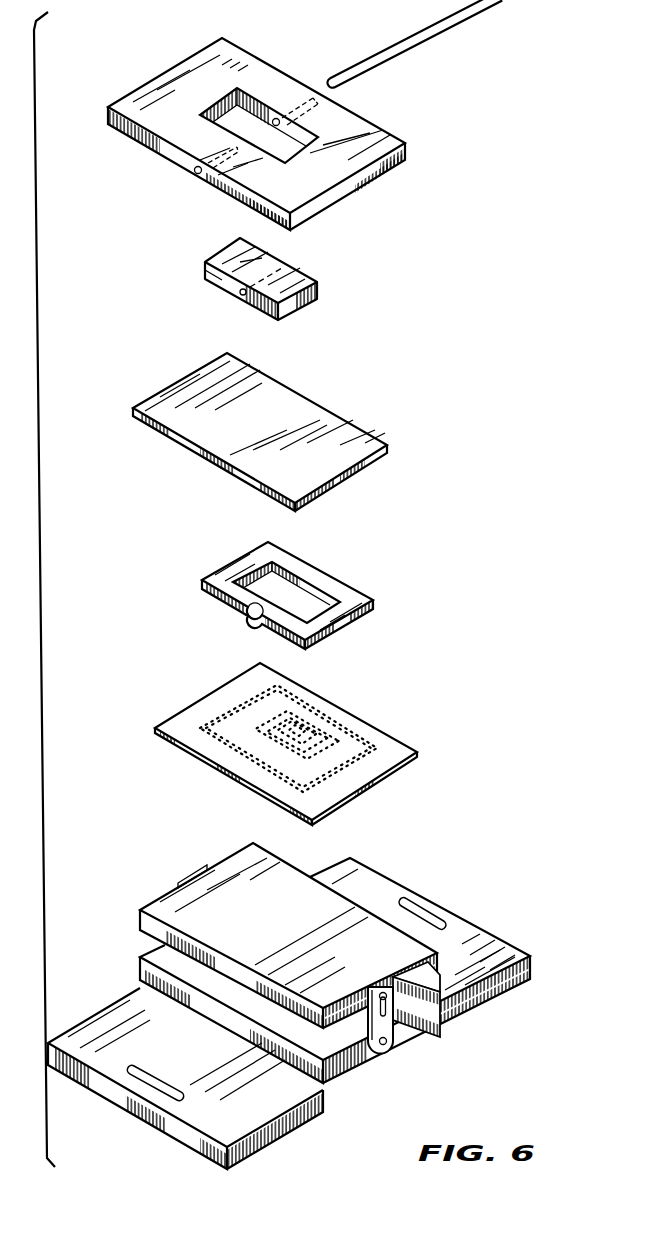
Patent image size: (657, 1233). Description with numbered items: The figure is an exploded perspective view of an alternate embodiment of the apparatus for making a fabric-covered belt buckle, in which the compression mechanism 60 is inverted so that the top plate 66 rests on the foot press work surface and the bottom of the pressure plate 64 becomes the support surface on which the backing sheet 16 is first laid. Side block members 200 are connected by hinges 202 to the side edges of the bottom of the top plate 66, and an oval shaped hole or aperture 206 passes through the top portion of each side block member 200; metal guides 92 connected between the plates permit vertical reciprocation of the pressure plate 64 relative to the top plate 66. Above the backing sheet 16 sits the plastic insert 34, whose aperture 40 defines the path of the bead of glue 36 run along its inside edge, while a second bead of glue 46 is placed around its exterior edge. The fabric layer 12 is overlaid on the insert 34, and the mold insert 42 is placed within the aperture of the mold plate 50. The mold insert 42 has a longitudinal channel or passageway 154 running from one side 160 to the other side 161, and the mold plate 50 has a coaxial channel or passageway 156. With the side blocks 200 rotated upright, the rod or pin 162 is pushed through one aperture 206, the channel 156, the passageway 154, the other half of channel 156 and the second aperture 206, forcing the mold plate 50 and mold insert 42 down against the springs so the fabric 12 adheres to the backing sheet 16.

The mold plate 50 is at (393, 139).
The channel or passageway 156 is at (291, 100).
The rod or pin 162 is at (410, 38).
The side of mold insert 161 is at (262, 258).
The channel or passageway 154 is at (290, 270).
The mold insert 42 is at (310, 294).
The side of mold insert 160 is at (220, 283).
The fabric layer 12 is at (342, 430).
The insert 34 is at (350, 595).
The aperture 40 is at (235, 600).
The second bead of glue 46 is at (280, 690).
The bead of glue 36 is at (307, 742).
The backing sheet 16 is at (392, 758).
The pressure plate 64 is at (166, 902).
The oval shaped hole or aperture 206 is at (418, 905).
The compression mechanism 60 is at (320, 1009).
The side block members 200 is at (513, 947).
The hinges 202 is at (447, 1033).
The top plate 66 is at (412, 1040).
The metal guides 92 is at (388, 1040).